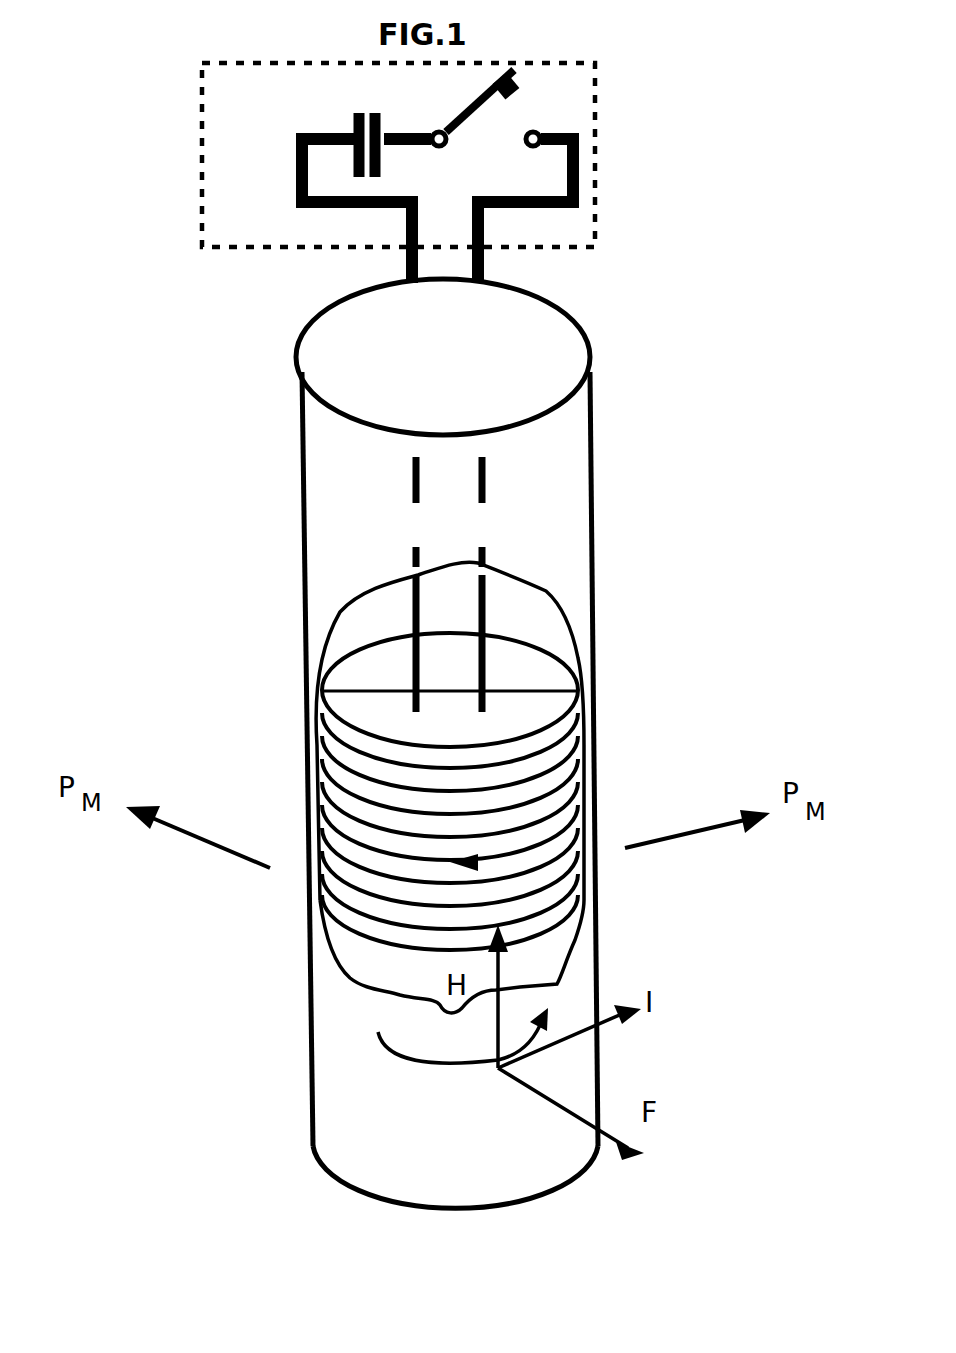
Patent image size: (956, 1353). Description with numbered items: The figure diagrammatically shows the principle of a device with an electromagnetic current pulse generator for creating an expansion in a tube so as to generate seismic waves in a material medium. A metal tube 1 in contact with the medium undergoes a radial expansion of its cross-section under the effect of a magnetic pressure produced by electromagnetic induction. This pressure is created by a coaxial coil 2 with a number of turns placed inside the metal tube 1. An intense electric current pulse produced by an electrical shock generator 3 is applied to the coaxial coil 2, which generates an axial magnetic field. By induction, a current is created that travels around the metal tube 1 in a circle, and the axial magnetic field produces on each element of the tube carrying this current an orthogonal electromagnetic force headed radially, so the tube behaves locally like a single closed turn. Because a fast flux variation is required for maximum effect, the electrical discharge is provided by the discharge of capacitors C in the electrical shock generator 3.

The metal tube 1 is at (300, 456).
The coaxial coil 2 is at (342, 753).
The electrical shock generator 3 is at (384, 206).
The capacitors C is at (338, 111).